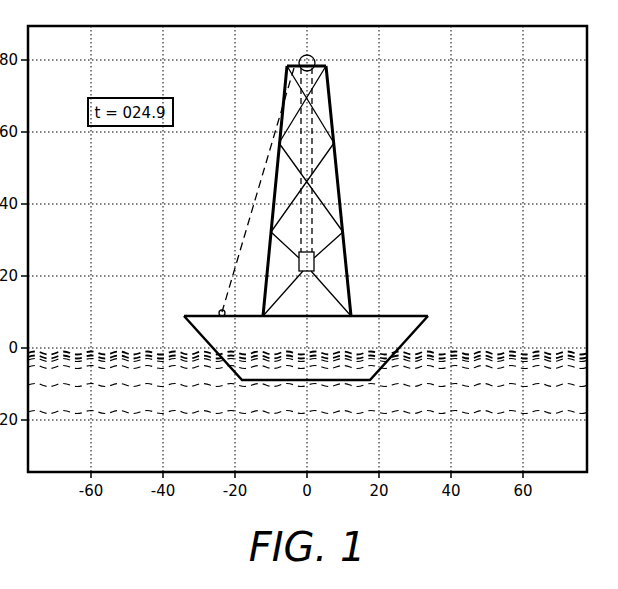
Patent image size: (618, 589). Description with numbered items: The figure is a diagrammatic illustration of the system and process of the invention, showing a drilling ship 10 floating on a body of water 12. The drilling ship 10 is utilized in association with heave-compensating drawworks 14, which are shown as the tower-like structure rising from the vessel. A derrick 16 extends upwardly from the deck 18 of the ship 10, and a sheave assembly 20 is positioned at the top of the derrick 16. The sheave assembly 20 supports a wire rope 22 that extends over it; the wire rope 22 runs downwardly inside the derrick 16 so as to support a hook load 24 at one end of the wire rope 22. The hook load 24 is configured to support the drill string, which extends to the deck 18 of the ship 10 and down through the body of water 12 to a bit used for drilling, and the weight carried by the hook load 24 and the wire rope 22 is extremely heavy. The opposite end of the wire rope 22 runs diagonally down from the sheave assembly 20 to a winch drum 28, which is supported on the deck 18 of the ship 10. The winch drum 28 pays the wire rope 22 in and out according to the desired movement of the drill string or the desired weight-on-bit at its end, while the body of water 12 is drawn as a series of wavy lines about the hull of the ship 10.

The drilling ship 10 is at (420, 316).
The body of water 12 is at (500, 353).
The heave-compensating drawworks 14 is at (321, 175).
The derrick 16 is at (337, 175).
The deck 18 is at (360, 315).
The sheave assembly 20 is at (300, 60).
The wire rope 22 is at (257, 200).
The hook load 24 is at (314, 260).
The winch drum 28 is at (217, 309).